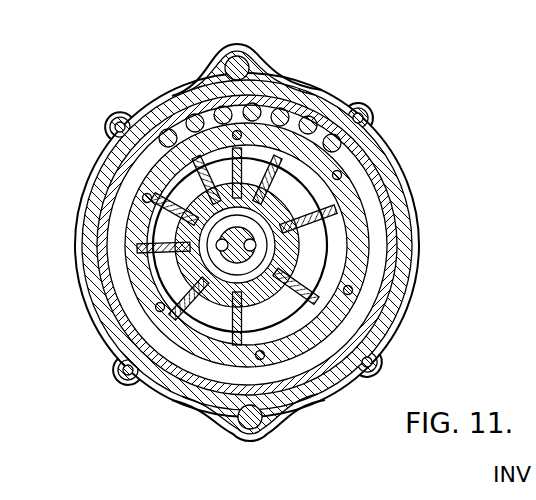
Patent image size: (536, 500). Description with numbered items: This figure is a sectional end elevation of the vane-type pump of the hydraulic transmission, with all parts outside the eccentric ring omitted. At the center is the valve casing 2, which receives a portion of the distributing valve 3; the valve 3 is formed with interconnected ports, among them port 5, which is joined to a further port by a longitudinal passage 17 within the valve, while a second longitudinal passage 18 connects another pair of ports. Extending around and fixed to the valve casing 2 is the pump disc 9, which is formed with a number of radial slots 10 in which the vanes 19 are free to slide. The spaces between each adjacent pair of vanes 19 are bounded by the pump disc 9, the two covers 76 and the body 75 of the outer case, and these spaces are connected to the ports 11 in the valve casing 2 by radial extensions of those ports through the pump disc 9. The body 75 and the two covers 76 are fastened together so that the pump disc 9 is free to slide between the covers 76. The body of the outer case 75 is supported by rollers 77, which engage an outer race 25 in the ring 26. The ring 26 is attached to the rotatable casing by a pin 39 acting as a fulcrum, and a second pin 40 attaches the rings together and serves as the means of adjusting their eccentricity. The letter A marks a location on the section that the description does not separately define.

The valve casing 2 is at (160, 217).
The distributing valve 3 is at (392, 298).
The port 5 is at (115, 292).
The pump disc 9 is at (290, 182).
The radial slots 10 is at (237, 215).
The ports 11 is at (360, 246).
The longitudinal passage 17 is at (180, 246).
The longitudinal passage 18 is at (345, 230).
The vanes 19 is at (275, 155).
The outer race 25 is at (396, 250).
The ring 26 is at (407, 272).
The pin 39 is at (249, 61).
The pin 40 is at (256, 427).
The body 75 is at (170, 322).
The covers 76 is at (333, 268).
The rollers 77 is at (315, 118).
The vane A is at (305, 232).